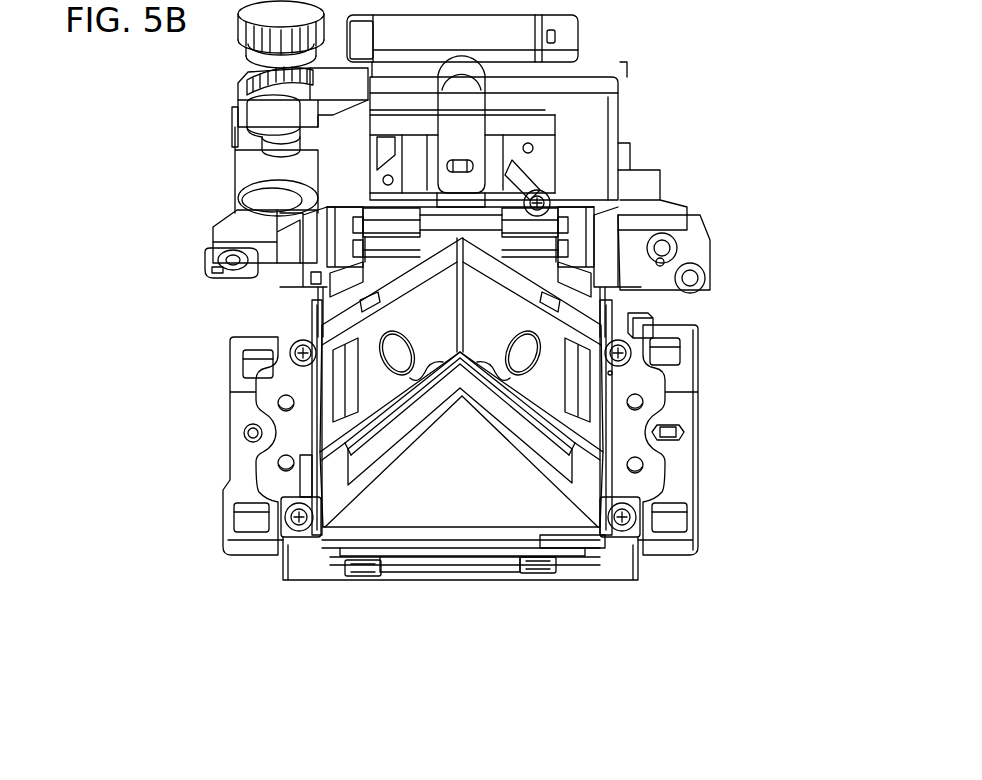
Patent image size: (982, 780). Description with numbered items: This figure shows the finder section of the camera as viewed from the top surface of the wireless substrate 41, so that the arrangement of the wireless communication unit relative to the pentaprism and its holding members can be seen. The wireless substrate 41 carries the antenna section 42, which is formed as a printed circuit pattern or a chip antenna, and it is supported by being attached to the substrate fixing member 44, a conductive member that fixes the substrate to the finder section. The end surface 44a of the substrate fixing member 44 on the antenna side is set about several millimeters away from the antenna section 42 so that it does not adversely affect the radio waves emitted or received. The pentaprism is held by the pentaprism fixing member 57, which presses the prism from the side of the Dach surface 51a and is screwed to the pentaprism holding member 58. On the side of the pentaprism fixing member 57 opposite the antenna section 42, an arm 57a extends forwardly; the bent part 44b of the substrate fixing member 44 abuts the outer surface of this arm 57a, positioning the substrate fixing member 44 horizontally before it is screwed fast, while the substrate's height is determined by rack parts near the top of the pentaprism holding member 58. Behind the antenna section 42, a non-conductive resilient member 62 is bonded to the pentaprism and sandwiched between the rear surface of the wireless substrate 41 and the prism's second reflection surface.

The pentaprism fixing member 57 is at (541, 337).
The arm 57a is at (322, 542).
The pentaprism holding member 58 is at (675, 417).
The substrate fixing member 44 is at (320, 540).
The end surface 44a is at (530, 550).
The bent part 44b is at (300, 534).
The wireless substrate 41 is at (493, 552).
The antenna section 42 is at (570, 557).
The Dach surface 51a is at (550, 443).
The resilient member 62 is at (570, 535).